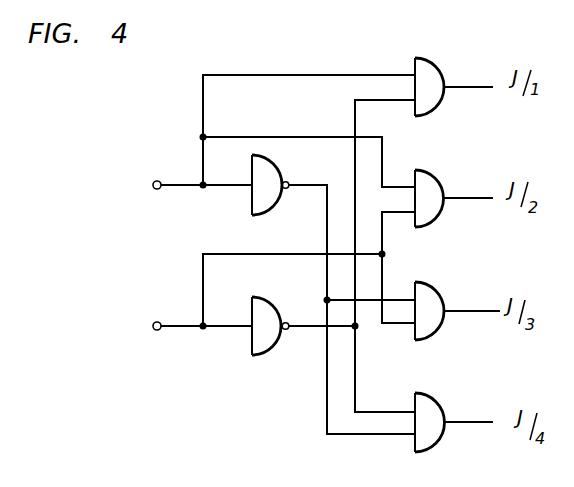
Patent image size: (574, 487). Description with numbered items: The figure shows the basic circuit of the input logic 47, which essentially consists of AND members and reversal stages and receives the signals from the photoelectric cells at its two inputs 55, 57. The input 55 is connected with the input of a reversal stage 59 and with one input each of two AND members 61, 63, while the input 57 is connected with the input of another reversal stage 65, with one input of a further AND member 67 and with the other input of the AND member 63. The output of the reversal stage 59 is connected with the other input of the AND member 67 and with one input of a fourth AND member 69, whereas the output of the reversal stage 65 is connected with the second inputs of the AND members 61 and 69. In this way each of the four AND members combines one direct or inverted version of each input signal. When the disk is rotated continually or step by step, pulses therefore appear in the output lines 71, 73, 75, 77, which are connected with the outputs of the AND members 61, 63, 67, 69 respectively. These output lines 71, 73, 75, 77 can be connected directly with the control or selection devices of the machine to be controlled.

The input logic 47 is at (270, 117).
The input 55 is at (153, 182).
The input 57 is at (153, 322).
The reversal stage 59 is at (257, 197).
The AND member 61 is at (427, 73).
The AND member 63 is at (428, 187).
The reversal stage 65 is at (258, 342).
The AND member 67 is at (428, 300).
The AND member 69 is at (430, 410).
The output line 71 is at (483, 83).
The output line 73 is at (480, 195).
The output line 75 is at (478, 308).
The output line 77 is at (482, 420).